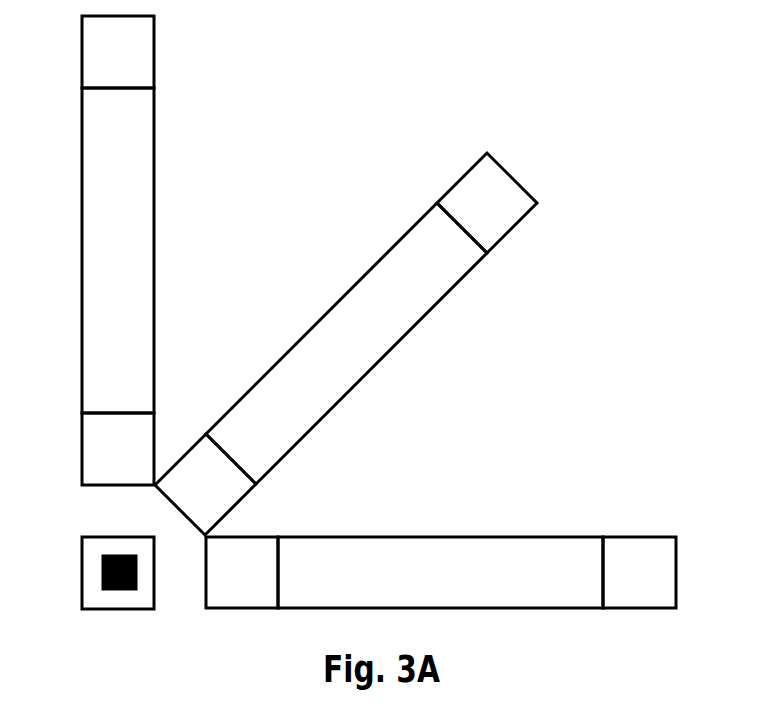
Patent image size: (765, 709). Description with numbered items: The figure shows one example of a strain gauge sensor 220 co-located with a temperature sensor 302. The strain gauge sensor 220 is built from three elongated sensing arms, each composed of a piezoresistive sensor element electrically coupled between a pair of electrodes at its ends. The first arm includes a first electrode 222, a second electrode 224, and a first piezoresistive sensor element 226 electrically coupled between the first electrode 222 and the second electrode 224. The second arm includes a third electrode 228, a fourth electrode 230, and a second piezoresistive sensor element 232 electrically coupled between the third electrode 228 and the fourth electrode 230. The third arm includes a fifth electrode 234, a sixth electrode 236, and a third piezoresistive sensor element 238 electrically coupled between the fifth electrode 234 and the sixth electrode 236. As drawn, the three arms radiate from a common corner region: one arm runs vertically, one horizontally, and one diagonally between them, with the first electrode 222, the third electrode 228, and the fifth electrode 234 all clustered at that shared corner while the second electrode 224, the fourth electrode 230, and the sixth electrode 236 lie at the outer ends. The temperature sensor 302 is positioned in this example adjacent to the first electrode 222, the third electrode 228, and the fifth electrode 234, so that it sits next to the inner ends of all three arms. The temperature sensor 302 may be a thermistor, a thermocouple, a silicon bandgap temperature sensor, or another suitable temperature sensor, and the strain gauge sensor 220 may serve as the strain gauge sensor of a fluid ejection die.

The strain gauge sensor 220 is at (389, 66).
The first electrode 222 is at (107, 460).
The second electrode 224 is at (108, 61).
The first piezoresistive sensor element 226 is at (108, 240).
The third electrode 228 is at (200, 458).
The fourth electrode 230 is at (467, 192).
The second piezoresistive sensor element 232 is at (305, 352).
The fifth electrode 234 is at (251, 543).
The sixth electrode 236 is at (641, 543).
The third piezoresistive sensor element 238 is at (438, 543).
The temperature sensor 302 is at (108, 536).